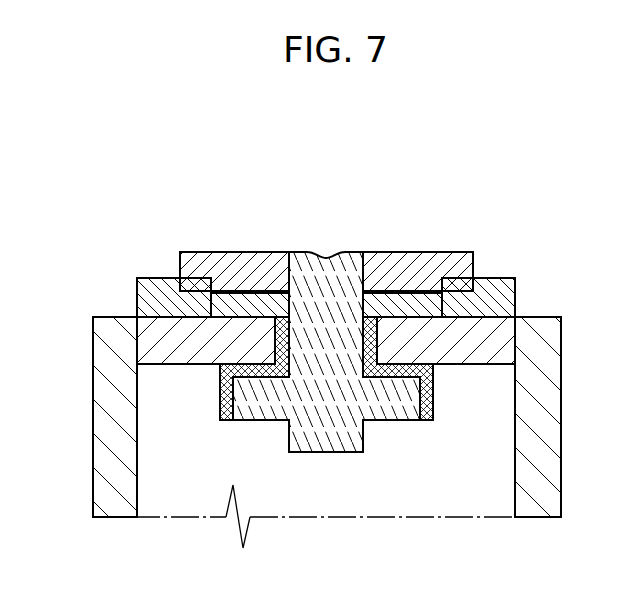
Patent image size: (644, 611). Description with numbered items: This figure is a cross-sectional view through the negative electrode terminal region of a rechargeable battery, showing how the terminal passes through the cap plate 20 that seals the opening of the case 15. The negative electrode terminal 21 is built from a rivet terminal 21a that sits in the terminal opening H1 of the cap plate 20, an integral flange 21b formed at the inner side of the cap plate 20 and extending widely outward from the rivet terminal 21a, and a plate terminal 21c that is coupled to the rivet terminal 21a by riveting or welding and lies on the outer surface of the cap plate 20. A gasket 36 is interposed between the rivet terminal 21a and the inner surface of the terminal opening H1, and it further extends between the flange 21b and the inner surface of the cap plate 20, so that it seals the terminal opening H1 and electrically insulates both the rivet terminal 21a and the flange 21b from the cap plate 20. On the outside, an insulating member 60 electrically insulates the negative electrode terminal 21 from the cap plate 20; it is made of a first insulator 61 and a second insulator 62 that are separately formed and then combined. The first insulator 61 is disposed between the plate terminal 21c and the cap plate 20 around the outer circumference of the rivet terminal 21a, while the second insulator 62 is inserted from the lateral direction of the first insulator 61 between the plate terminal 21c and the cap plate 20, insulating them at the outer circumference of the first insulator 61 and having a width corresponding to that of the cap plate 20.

The case 15 is at (545, 408).
The cap plate 20 is at (500, 340).
The negative electrode terminal 21 is at (323, 227).
The rivet terminal 21a is at (348, 435).
The flange 21b is at (243, 403).
The plate terminal 21c is at (193, 252).
The gasket 36 is at (283, 353).
The insulating member 60 is at (508, 188).
The first insulator 61 is at (422, 298).
The second insulator 62 is at (490, 278).
The terminal opening H1 is at (283, 353).